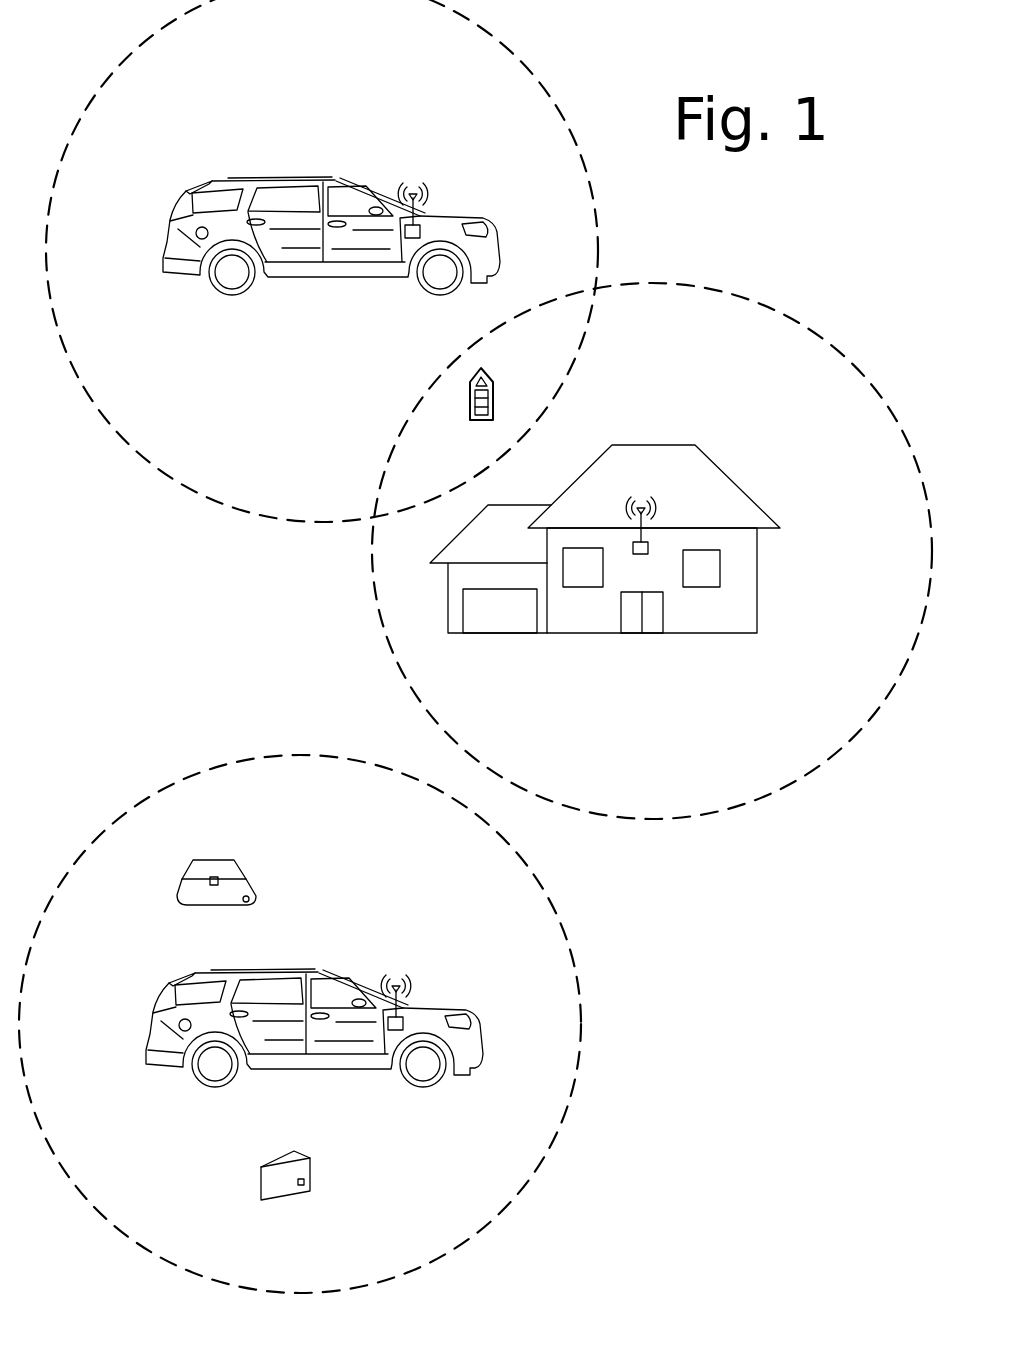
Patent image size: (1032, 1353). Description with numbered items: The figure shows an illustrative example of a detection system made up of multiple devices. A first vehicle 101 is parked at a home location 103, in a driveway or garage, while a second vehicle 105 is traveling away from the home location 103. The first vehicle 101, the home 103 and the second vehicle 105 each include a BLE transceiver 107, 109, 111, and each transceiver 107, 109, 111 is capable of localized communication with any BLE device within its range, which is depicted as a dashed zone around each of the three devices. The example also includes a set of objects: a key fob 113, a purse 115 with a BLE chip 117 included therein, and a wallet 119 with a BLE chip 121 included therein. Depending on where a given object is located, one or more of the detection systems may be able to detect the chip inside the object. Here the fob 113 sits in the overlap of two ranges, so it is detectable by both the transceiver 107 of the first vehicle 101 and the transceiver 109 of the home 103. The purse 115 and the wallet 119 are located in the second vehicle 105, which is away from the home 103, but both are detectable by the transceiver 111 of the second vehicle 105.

The first vehicle 101 is at (298, 279).
The home location 103 is at (593, 635).
The second vehicle 105 is at (281, 1070).
The BLE transceiver 107 is at (414, 190).
The BLE transceiver 109 is at (640, 503).
The BLE transceiver 111 is at (398, 984).
The key fob 113 is at (493, 368).
The purse 115 is at (254, 876).
The BLE chip 117 is at (245, 905).
The wallet 119 is at (303, 1156).
The BLE chip 121 is at (301, 1191).